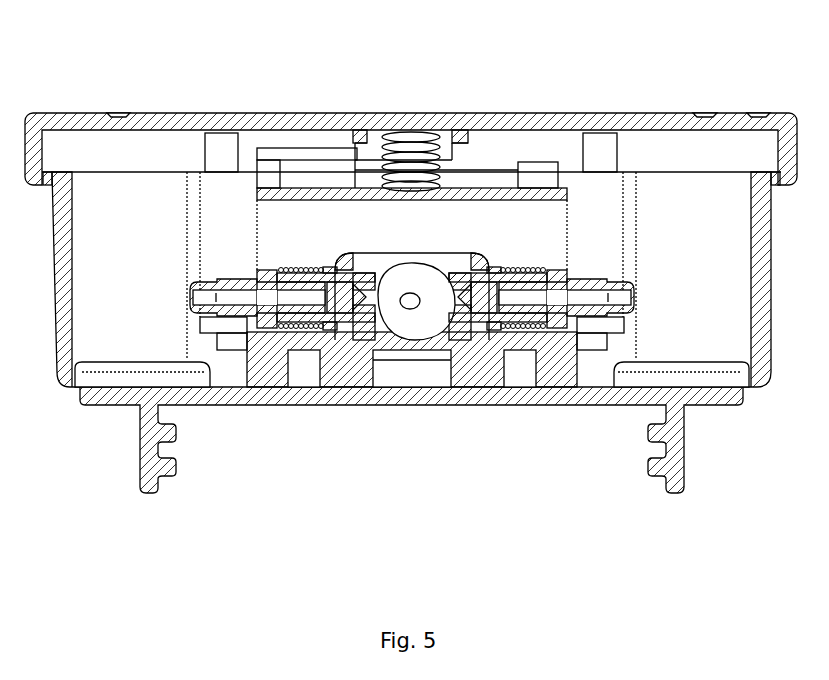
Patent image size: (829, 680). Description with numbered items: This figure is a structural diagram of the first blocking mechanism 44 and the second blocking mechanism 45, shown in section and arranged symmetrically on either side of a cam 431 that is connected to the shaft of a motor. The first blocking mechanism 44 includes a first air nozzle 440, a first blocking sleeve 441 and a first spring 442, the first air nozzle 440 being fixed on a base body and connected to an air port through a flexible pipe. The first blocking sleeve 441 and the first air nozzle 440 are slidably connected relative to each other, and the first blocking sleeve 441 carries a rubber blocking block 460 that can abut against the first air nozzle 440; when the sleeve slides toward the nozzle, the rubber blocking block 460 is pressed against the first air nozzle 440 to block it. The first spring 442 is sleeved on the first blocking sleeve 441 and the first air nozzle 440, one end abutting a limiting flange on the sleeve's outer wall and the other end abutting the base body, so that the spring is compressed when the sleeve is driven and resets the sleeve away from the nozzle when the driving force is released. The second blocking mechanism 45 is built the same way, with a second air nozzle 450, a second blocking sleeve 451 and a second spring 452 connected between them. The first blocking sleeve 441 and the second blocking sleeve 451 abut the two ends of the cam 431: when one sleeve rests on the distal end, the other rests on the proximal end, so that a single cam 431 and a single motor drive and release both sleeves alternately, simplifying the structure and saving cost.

The first blocking mechanism 44 is at (272, 170).
The second blocking mechanism 45 is at (529, 170).
The cam 431 is at (424, 323).
The first air nozzle 440 is at (217, 297).
The first blocking sleeve 441 is at (337, 272).
The first spring 442 is at (268, 272).
The rubber blocking block 460 is at (347, 262).
The second air nozzle 450 is at (604, 297).
The second blocking sleeve 451 is at (465, 272).
The second spring 452 is at (552, 272).